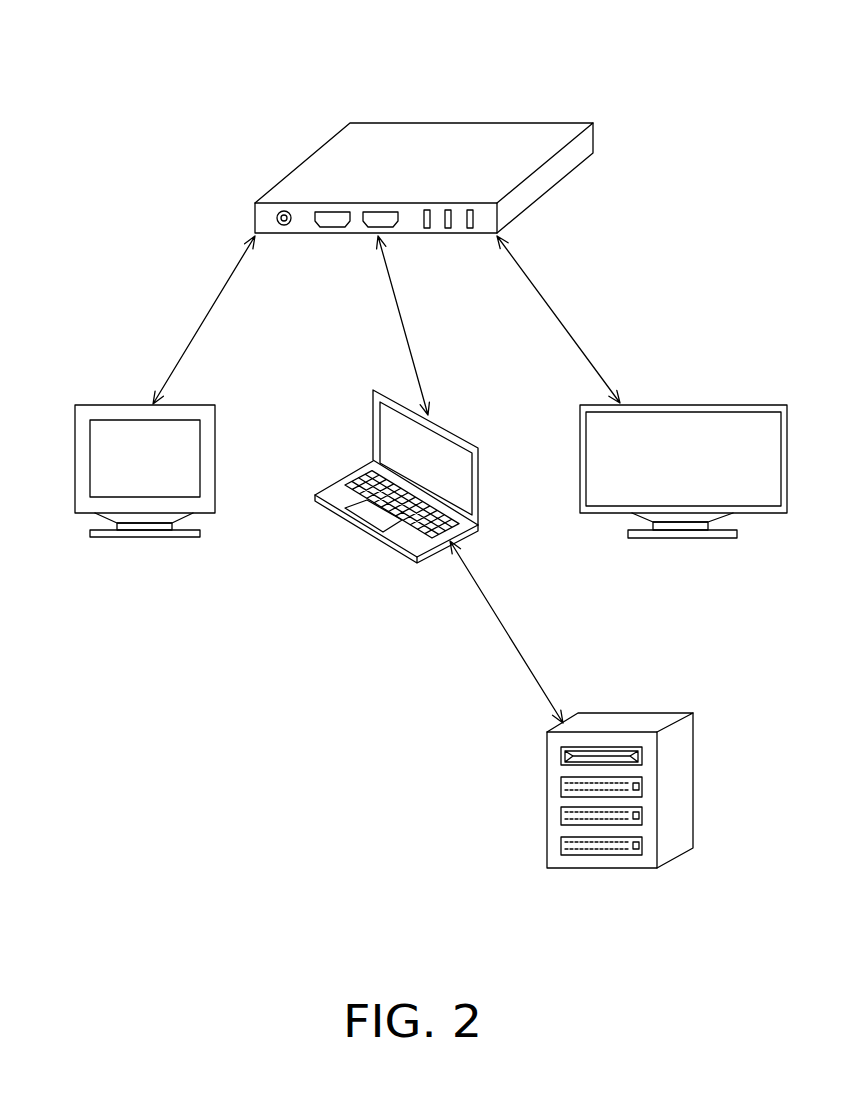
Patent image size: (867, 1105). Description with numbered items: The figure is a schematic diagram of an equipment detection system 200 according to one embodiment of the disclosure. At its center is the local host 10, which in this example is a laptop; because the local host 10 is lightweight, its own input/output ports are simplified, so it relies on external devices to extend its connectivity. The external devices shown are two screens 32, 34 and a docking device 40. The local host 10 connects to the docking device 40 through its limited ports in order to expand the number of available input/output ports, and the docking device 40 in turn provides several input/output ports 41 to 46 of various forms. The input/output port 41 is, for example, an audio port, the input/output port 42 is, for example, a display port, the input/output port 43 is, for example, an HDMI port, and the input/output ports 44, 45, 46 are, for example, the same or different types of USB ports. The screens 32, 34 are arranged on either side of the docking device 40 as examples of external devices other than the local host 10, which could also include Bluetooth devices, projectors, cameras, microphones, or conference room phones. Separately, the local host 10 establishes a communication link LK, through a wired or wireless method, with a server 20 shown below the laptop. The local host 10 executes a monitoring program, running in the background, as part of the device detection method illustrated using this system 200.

The equipment detection system 200 is at (82, 63).
The docking device 40 is at (455, 135).
The input/output port 41 is at (284, 229).
The input/output port 42 is at (337, 228).
The input/output port 43 is at (382, 210).
The input/output port 44 is at (427, 229).
The input/output port 45 is at (448, 229).
The input/output port 46 is at (470, 229).
The screen 32 is at (113, 403).
The screen 34 is at (681, 403).
The local host 10 is at (452, 430).
The server 20 is at (634, 712).
The communication link LK is at (506, 632).